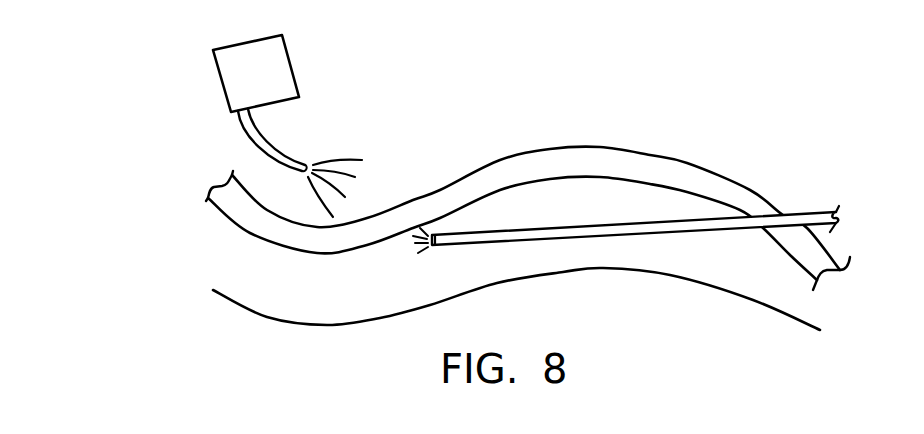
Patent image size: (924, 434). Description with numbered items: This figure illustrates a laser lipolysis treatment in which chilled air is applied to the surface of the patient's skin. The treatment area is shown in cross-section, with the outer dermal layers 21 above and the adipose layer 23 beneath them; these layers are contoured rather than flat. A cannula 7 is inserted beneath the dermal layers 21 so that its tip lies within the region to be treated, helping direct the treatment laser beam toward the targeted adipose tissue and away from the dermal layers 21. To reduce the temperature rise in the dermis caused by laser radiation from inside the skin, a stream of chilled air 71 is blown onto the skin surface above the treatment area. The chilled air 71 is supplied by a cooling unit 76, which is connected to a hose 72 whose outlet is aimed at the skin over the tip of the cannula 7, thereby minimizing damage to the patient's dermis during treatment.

The cannula 7 is at (578, 227).
The dermal layers 21 is at (413, 207).
The adipose layer 23 is at (382, 310).
The stream of chilled air 71 is at (348, 147).
The hose 72 is at (264, 134).
The cooling unit 76 is at (243, 93).